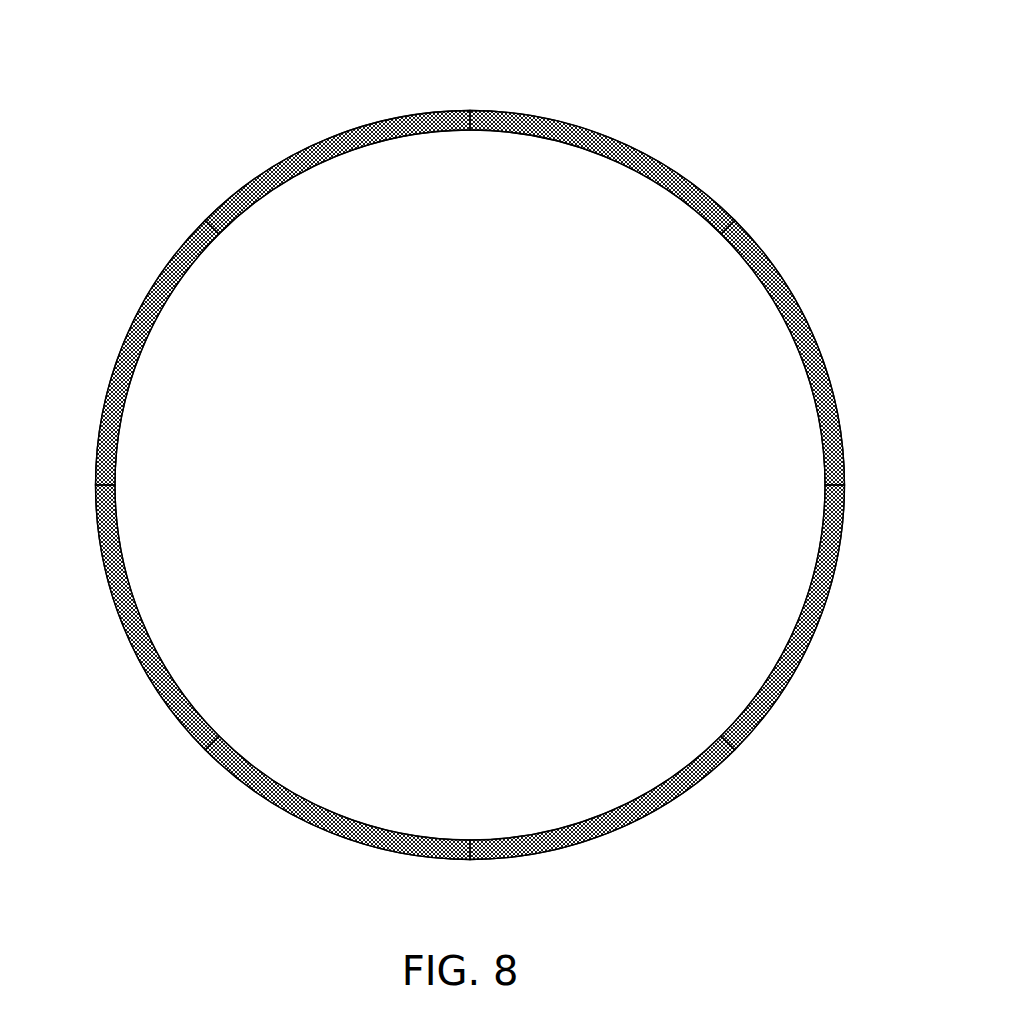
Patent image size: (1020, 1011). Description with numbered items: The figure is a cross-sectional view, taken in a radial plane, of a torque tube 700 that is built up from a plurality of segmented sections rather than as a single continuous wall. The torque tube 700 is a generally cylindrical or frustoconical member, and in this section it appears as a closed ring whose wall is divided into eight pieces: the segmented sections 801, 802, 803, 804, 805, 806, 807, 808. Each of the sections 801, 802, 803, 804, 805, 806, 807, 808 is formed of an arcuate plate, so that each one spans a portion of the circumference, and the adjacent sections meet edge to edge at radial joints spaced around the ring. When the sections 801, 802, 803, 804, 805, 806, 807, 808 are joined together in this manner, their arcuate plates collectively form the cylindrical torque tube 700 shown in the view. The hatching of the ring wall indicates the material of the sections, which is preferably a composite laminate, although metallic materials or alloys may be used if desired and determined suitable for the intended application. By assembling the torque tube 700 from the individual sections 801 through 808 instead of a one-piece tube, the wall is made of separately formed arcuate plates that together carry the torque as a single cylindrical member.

The torque tube 700 is at (462, 75).
The segmented section 801 is at (630, 145).
The segmented section 802 is at (812, 330).
The segmented section 803 is at (830, 603).
The segmented section 804 is at (655, 813).
The segmented section 805 is at (302, 823).
The segmented section 806 is at (117, 610).
The segmented section 807 is at (130, 315).
The segmented section 808 is at (311, 146).